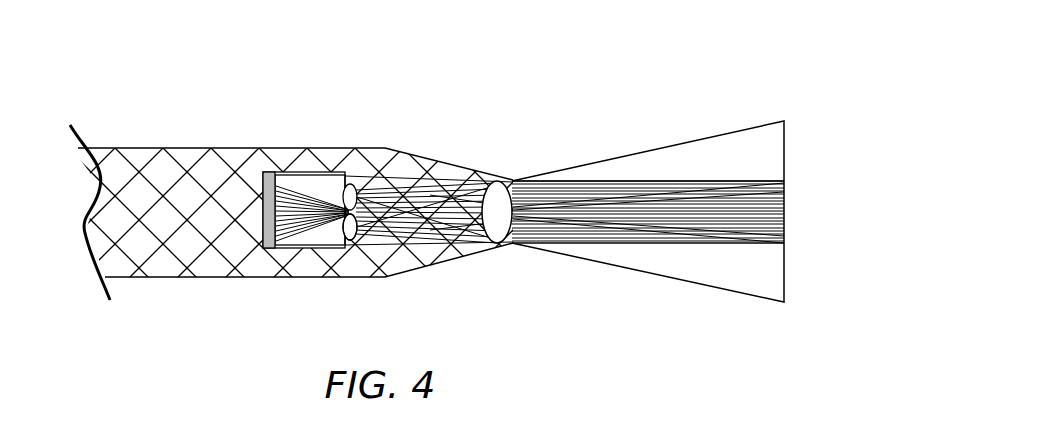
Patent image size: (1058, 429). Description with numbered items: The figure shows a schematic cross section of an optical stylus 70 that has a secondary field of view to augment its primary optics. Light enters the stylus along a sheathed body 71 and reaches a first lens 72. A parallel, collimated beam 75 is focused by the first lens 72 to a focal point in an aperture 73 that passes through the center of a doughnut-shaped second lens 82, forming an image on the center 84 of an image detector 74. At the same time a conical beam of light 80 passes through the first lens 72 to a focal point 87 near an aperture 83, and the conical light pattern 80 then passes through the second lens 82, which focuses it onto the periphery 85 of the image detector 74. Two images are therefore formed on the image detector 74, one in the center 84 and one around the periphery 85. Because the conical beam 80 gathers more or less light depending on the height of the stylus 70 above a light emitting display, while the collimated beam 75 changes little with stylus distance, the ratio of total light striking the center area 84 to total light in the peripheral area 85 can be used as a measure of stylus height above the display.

The optical stylus 70 is at (517, 87).
The braided sheath 71 is at (153, 150).
The first lens 72 is at (514, 238).
The aperture 73 is at (358, 218).
The image detector 74 is at (261, 196).
The collimated beam 75 is at (640, 212).
The conical beam of light 80 is at (748, 270).
The second lens 82 is at (351, 197).
The aperture 83 is at (400, 216).
The center of the image detector 84 is at (301, 201).
The periphery of the image detector 85 is at (284, 246).
The focal point 87 is at (428, 212).